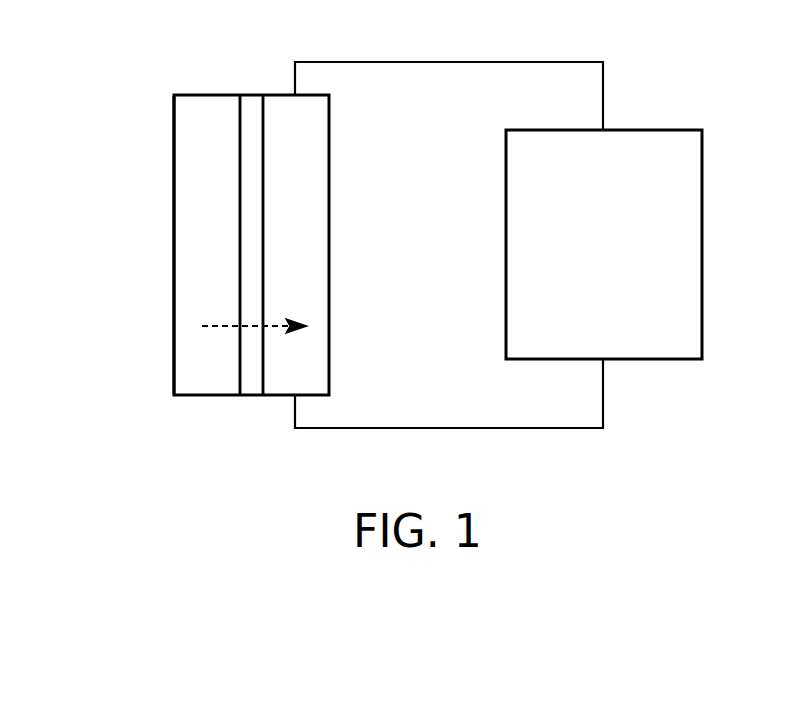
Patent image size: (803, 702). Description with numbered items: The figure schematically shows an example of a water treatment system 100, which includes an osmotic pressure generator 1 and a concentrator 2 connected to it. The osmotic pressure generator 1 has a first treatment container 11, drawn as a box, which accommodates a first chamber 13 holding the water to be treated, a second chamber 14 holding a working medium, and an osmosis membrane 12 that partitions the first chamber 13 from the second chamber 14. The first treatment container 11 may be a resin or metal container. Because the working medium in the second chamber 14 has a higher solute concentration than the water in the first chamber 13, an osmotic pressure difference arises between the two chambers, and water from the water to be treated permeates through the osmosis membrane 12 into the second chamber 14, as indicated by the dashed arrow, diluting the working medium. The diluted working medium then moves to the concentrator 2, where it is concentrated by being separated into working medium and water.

The water treatment system 100 is at (78, 39).
The osmotic pressure generator 1 is at (174, 121).
The first treatment container 11 is at (174, 147).
The osmosis membrane 12 is at (249, 197).
The first chamber 13 is at (190, 233).
The second chamber 14 is at (281, 273).
The concentrator 2 is at (665, 361).